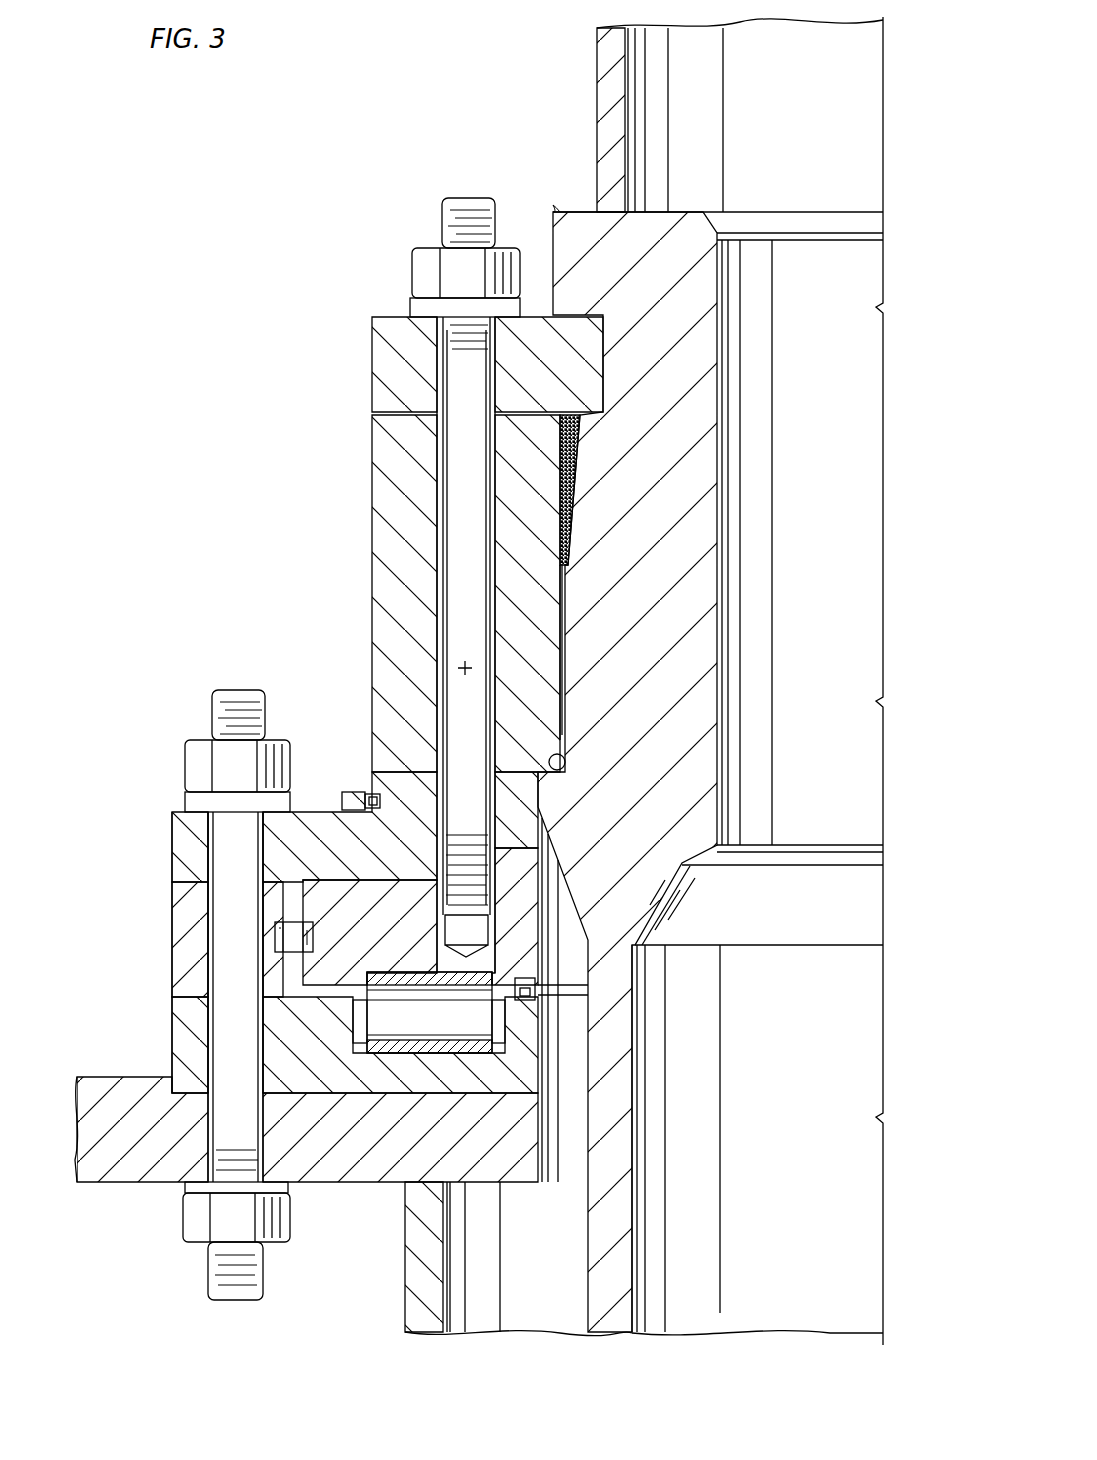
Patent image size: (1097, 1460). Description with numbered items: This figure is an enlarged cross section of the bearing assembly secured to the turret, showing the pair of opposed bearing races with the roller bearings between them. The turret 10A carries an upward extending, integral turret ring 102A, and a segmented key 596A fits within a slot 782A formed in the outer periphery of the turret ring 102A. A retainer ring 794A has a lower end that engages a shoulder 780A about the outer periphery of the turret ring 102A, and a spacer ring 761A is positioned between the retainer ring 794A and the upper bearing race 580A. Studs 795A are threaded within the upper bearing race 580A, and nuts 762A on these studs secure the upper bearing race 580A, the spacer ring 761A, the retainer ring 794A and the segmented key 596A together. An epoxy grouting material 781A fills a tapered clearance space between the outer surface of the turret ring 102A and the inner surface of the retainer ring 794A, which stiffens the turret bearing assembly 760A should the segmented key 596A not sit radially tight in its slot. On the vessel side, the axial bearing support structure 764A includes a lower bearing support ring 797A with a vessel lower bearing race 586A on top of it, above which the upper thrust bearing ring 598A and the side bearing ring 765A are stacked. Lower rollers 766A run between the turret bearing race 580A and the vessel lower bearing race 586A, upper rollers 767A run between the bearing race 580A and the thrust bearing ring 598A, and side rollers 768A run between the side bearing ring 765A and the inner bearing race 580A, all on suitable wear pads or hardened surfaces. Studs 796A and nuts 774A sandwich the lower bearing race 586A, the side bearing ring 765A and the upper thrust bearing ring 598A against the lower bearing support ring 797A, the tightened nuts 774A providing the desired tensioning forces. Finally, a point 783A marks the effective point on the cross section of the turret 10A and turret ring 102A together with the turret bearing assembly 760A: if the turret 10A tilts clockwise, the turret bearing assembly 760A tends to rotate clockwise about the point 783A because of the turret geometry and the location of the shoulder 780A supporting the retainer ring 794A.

The turret 10A is at (620, 1075).
The turret ring 102A is at (700, 818).
The upper bearing race 580A is at (330, 965).
The vessel lower bearing race 586A is at (180, 1040).
The segmented key 596A is at (385, 335).
The upper thrust bearing ring 598A is at (185, 855).
The turret bearing assembly 760A is at (358, 410).
The spacer ring 761A is at (380, 780).
The nut 762A is at (422, 262).
The axial bearing support structure 764A is at (152, 828).
The side bearing ring 765A is at (180, 905).
The lower rollers 766A is at (455, 1025).
The upper rollers 767A is at (235, 803).
The side rollers 768A is at (280, 938).
The nut 774A is at (200, 752).
The shoulder 780A is at (566, 757).
The epoxy grouting material 781A is at (573, 503).
The slot 782A is at (585, 312).
The point 783A is at (463, 666).
The retainer ring 794A is at (382, 462).
The stud 795A is at (468, 205).
The stud 796A is at (225, 700).
The lower bearing support ring 797A is at (335, 1165).